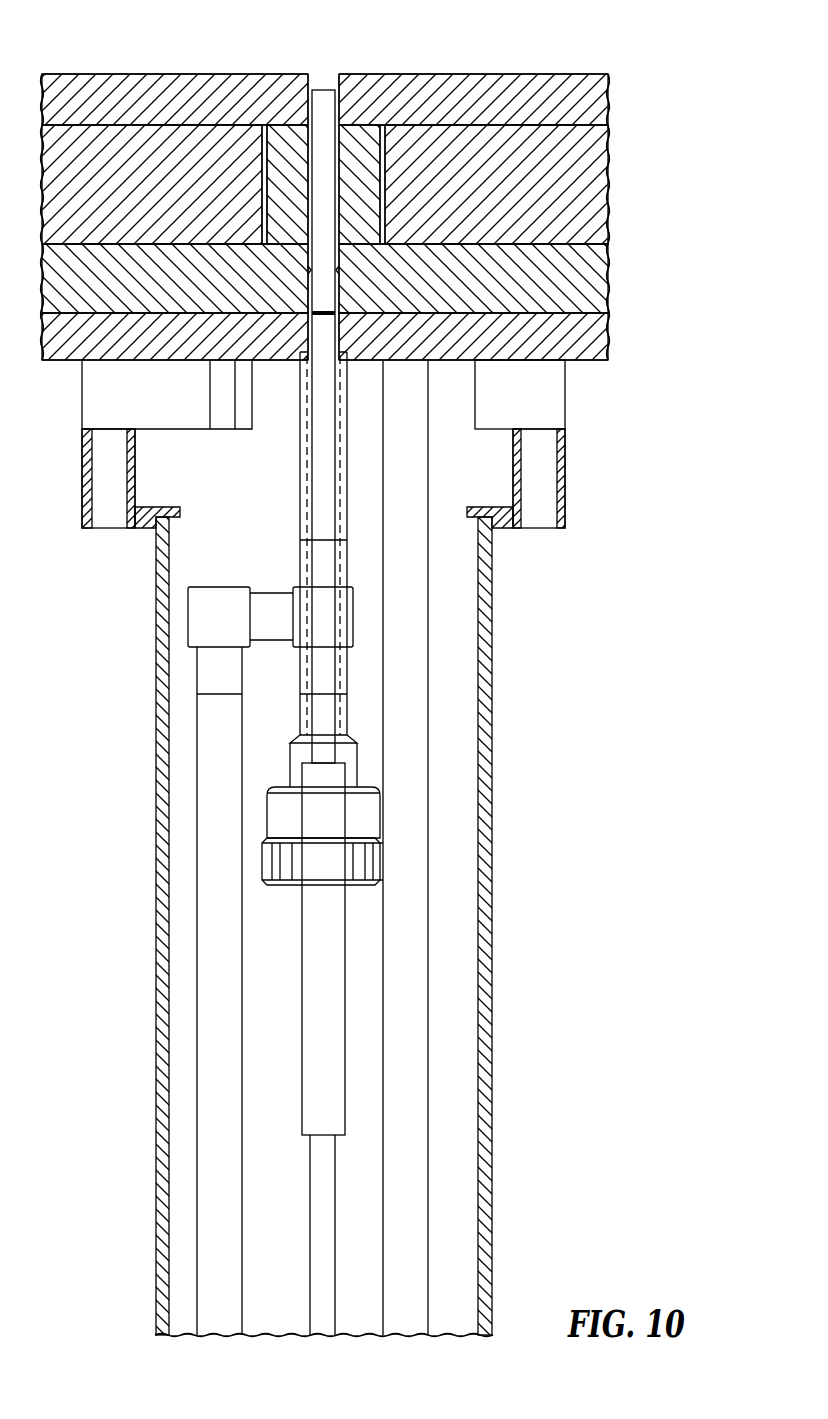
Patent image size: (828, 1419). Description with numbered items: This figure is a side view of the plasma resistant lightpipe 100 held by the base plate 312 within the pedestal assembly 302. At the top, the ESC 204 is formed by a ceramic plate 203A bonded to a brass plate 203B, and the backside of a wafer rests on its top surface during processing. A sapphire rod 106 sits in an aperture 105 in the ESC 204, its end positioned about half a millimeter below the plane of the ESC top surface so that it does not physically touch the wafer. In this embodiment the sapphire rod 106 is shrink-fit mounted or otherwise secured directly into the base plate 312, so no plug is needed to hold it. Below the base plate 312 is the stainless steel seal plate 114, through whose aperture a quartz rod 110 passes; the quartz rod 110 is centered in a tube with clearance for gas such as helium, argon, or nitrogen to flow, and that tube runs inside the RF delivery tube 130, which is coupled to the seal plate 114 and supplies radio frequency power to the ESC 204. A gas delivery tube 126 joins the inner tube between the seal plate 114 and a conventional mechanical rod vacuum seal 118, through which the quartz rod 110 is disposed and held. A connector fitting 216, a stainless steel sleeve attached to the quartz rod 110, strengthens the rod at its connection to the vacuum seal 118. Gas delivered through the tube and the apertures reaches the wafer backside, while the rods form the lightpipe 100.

The plasma resistant lightpipe 100 is at (250, 484).
The aperture 105 is at (337, 56).
The sapphire rod 106 is at (325, 90).
The quartz rod 110 is at (330, 400).
The seal plate 114 is at (602, 331).
The mechanical rod vacuum seal 118 is at (368, 808).
The gas delivery tube 126 is at (232, 1092).
The RF delivery tube 130 is at (157, 890).
The ceramic plate 203A is at (550, 73).
The brass plate 203B is at (602, 174).
The ESC 204 is at (603, 88).
The connector fitting 216 is at (310, 1012).
The pedestal assembly 302 is at (666, 135).
The base plate 312 is at (600, 262).